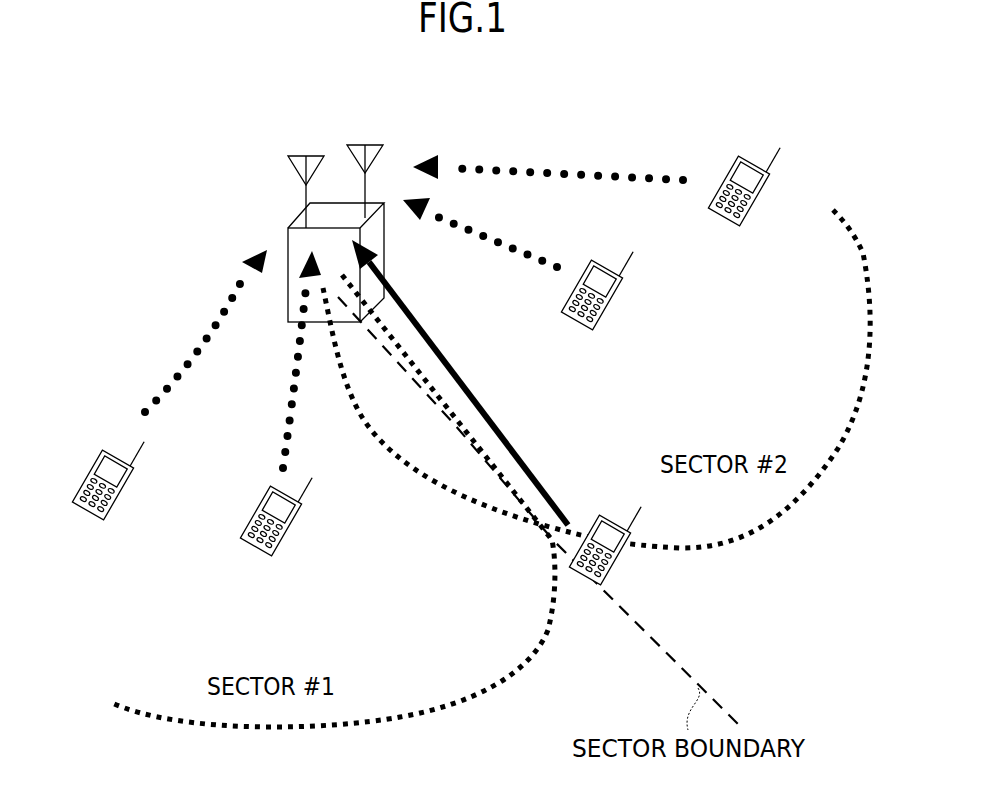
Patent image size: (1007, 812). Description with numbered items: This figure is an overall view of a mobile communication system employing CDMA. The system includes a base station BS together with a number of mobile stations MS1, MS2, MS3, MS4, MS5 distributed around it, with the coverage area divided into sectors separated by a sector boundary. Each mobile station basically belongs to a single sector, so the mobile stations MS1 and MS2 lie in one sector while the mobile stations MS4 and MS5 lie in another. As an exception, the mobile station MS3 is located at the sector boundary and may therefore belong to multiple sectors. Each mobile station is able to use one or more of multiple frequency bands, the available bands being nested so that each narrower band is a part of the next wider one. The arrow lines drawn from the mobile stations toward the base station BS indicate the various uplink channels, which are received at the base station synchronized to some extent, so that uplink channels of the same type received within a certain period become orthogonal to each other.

The base station BS is at (292, 228).
The mobile station MS1 is at (75, 502).
The mobile station MS2 is at (243, 540).
The mobile station MS3 is at (612, 576).
The mobile station MS4 is at (562, 317).
The mobile station MS5 is at (707, 212).